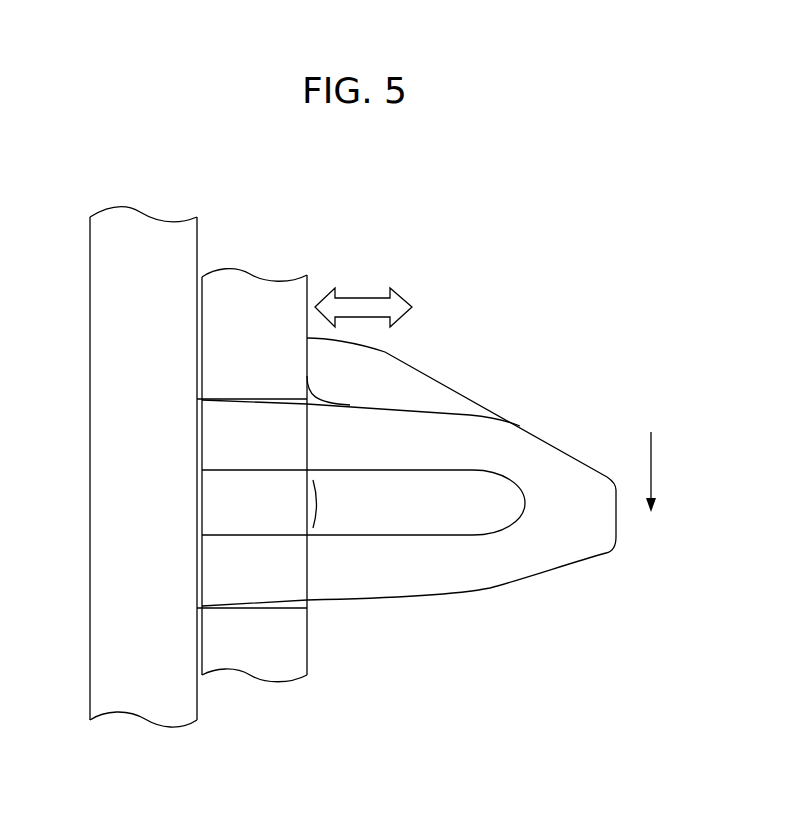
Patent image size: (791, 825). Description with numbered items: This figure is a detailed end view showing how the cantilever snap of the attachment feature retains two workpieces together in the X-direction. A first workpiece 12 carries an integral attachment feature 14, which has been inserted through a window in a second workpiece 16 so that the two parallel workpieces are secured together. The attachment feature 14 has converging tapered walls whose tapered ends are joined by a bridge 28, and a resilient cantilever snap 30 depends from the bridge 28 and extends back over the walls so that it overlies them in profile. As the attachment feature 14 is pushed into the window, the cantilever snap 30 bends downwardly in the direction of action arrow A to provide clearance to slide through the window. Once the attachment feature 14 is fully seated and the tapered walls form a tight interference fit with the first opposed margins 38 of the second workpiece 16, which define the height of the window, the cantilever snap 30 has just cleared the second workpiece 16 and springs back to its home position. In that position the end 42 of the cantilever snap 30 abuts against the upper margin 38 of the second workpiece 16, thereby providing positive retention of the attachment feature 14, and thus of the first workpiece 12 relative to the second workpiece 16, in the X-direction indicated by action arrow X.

The first workpiece 12 is at (115, 598).
The integral attachment feature 14 is at (459, 502).
The second workpiece 16 is at (275, 439).
The bridge 28 is at (618, 521).
The cantilever snap 30 is at (437, 387).
The first opposed margins 38 is at (307, 372).
The end of the cantilever snap 42 is at (323, 207).
The action arrow X is at (363, 303).
The action arrow A is at (651, 468).